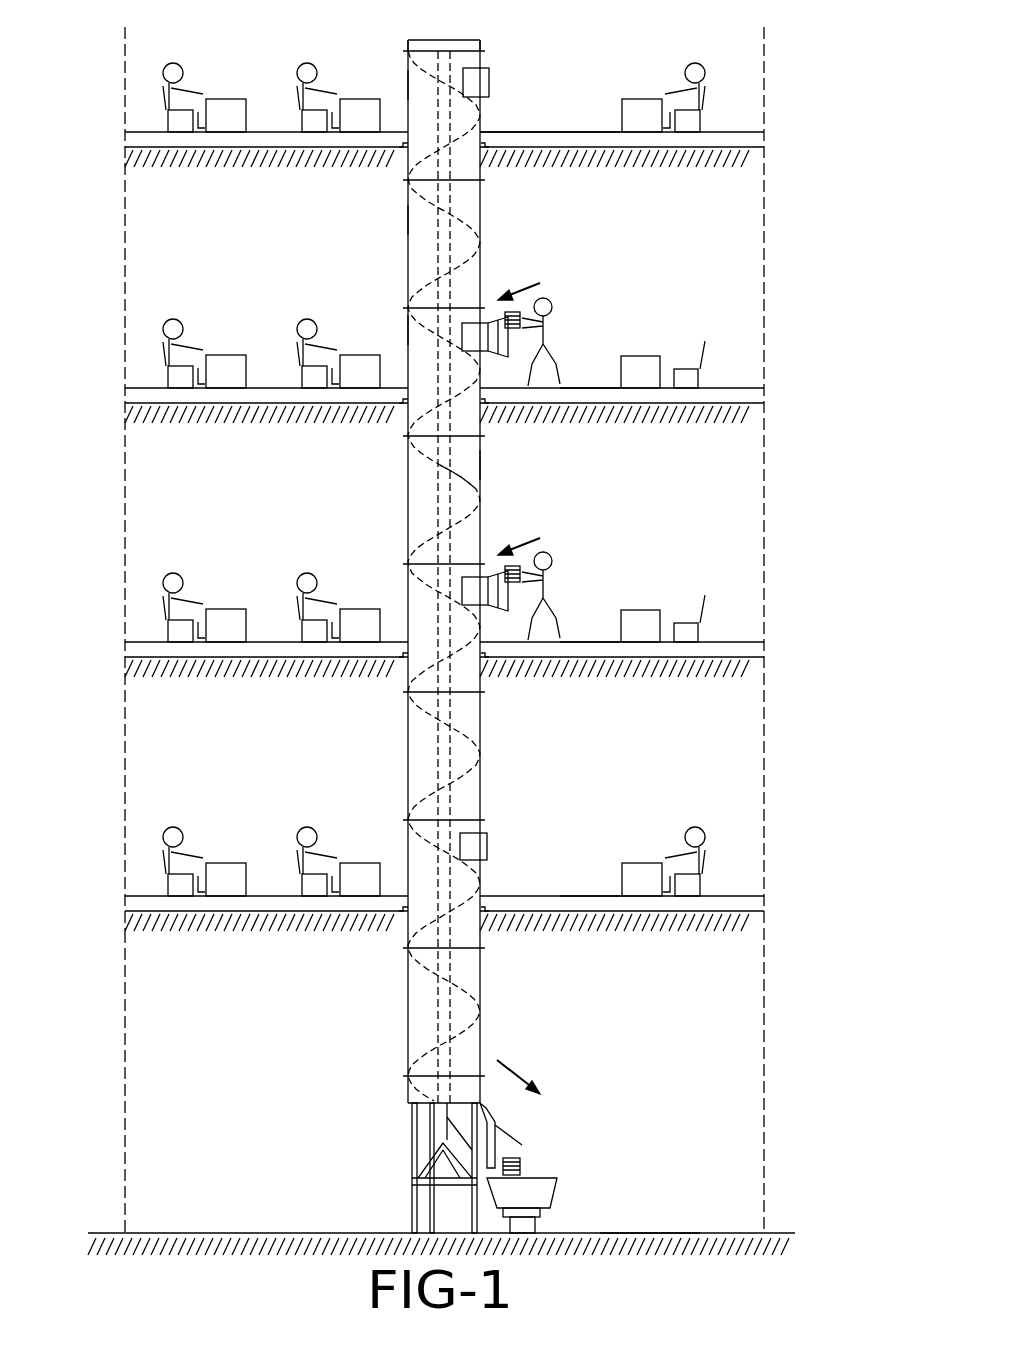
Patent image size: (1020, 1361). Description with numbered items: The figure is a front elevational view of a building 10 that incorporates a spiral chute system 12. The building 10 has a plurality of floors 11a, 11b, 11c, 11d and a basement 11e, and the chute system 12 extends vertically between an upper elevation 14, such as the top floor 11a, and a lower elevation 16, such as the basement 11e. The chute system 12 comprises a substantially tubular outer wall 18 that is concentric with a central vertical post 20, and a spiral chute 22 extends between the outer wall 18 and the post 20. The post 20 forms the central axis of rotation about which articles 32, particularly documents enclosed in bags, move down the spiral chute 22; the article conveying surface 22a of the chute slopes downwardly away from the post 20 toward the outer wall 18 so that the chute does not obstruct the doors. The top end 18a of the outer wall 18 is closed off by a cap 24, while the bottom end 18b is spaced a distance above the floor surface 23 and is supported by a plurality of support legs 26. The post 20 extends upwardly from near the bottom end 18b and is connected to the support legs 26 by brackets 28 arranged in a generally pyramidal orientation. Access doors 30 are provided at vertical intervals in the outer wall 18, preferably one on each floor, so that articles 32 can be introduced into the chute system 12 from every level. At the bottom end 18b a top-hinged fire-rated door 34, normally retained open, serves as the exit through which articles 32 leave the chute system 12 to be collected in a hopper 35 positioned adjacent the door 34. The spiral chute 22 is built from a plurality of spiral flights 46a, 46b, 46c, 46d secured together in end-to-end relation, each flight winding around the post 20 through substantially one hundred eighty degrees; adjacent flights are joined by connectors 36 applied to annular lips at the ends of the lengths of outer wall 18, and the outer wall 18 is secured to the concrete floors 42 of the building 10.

The building 10 is at (785, 480).
The floor 11a is at (160, 44).
The floor 11b is at (160, 274).
The floor 11c is at (160, 529).
The floor 11d is at (160, 786).
The basement 11e is at (160, 1034).
The spiral chute system 12 is at (496, 724).
The upper elevation 14 is at (530, 82).
The lower elevation 16 is at (648, 1216).
The tubular outer wall 18 is at (402, 714).
The top end 18a is at (462, 36).
The bottom end 18b is at (397, 1096).
The central vertical post 20 is at (430, 746).
The spiral chute 22 is at (478, 752).
The article conveying surface 22a is at (465, 495).
The floor surface 23 is at (232, 1232).
The cap 24 is at (410, 38).
The support legs 26 is at (472, 1222).
The brackets 28 is at (432, 1162).
The access door 30 is at (492, 78).
The articles 32 is at (515, 312).
The top-hinged fire-rated door 34 is at (493, 1124).
The hopper 35 is at (548, 1195).
The connectors 36 is at (468, 183).
The concrete floors 42 is at (592, 132).
The spiral flight 46a is at (405, 82).
The spiral flight 46b is at (400, 222).
The spiral flight 46c is at (400, 327).
The spiral flight 46d is at (480, 462).